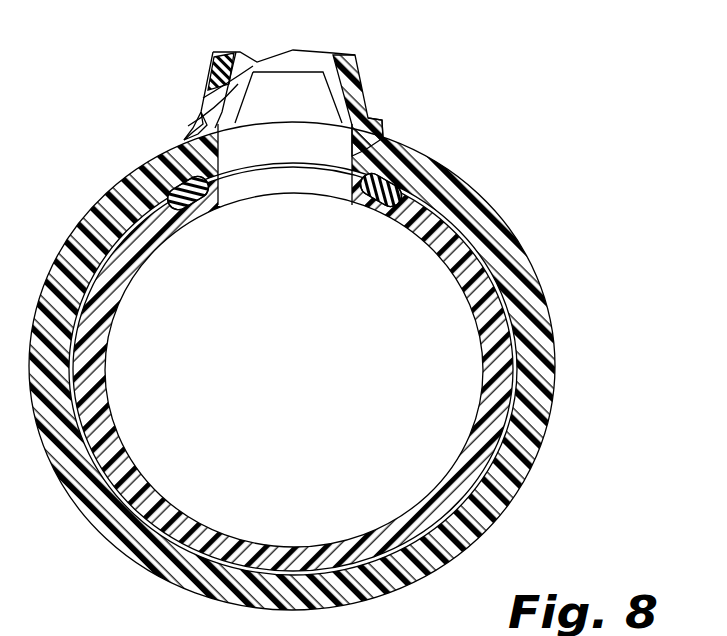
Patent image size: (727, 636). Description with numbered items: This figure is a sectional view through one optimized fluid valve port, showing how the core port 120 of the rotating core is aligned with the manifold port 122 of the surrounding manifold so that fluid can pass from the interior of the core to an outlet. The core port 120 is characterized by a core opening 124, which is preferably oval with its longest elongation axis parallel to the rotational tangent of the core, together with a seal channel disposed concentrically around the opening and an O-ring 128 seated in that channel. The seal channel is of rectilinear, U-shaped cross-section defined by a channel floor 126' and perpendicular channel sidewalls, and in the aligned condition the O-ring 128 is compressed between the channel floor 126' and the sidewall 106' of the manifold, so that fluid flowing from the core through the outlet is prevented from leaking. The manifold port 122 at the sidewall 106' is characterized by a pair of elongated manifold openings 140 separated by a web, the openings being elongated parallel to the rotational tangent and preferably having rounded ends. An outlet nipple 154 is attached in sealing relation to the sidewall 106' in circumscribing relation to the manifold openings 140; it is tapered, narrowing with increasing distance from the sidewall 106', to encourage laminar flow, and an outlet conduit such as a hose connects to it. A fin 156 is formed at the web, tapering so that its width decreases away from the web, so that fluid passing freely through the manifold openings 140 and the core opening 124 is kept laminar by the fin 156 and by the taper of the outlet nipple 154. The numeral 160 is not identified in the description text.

The manifold port 122 is at (302, 99).
The manifold openings 140 is at (283, 140).
The fin 156 is at (212, 80).
The outlet nipple 154 is at (366, 90).
The sidewall of the manifold 106' is at (392, 134).
The outer sleeve 160 is at (475, 180).
The core opening 124 is at (299, 183).
The O-ring 128 is at (200, 212).
The channel floor 126' is at (380, 225).
The core port 120 is at (266, 211).